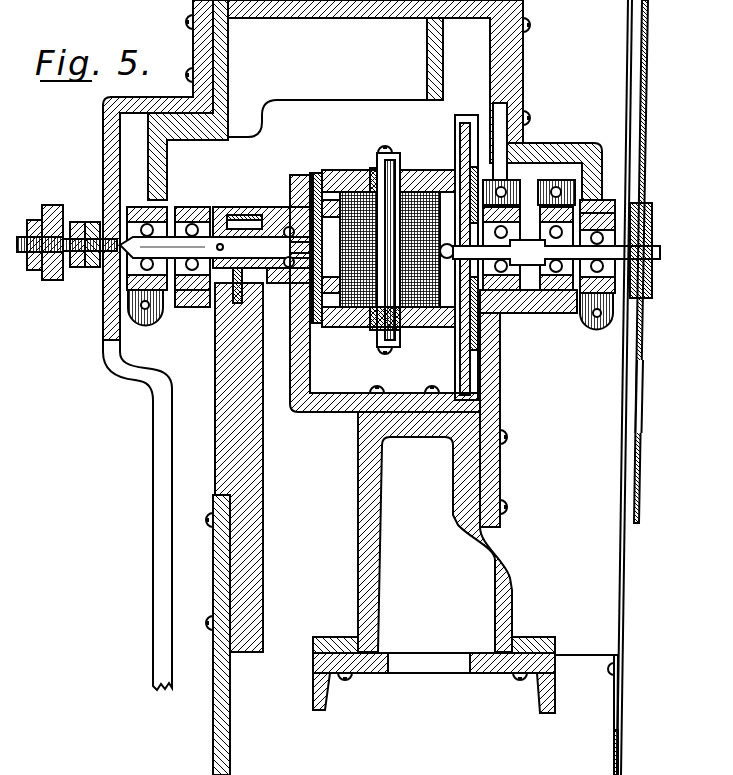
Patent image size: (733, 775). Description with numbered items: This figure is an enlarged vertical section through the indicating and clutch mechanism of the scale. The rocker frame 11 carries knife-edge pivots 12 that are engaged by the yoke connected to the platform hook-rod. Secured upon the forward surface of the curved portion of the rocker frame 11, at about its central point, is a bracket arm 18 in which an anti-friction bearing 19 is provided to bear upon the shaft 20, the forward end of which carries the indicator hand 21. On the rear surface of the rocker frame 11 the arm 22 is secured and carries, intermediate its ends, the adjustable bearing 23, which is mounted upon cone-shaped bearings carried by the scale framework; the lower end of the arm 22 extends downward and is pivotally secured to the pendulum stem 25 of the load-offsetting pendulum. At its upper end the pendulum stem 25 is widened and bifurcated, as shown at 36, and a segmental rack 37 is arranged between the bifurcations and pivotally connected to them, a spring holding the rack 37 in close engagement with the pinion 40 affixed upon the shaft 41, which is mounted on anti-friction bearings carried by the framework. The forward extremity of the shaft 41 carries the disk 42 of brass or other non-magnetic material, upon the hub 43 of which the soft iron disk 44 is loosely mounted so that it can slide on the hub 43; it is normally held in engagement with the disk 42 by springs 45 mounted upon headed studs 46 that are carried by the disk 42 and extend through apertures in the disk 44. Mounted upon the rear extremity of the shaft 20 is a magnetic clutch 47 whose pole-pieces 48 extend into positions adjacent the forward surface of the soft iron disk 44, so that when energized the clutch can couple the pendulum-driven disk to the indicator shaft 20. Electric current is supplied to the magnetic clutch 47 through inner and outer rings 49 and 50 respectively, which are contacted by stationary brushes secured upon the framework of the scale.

The rocker frame 11 is at (365, 13).
The knife-edge pivots 12 is at (587, 715).
The bracket arm 18 is at (558, 143).
The anti-friction bearing 19 is at (580, 316).
The shaft 20 is at (660, 252).
The indicator hand 21 is at (648, 140).
The arm 22 is at (106, 118).
The adjustable bearing 23 is at (92, 258).
The pendulum stem 25 is at (210, 740).
The bifurcated upper end of pendulum stem 36 is at (236, 287).
The segmental rack 37 is at (215, 287).
The pinion 40 is at (213, 292).
The shaft 41 is at (240, 243).
The disk 42 is at (312, 175).
The hub 43 is at (270, 318).
The soft iron disk 44 is at (323, 172).
The springs 45 is at (318, 323).
The headed studs 46 is at (345, 172).
The magnetic clutch 47 is at (350, 322).
The pole-pieces 48 is at (345, 322).
The inner ring 49 is at (475, 298).
The outer ring 50 is at (475, 325).